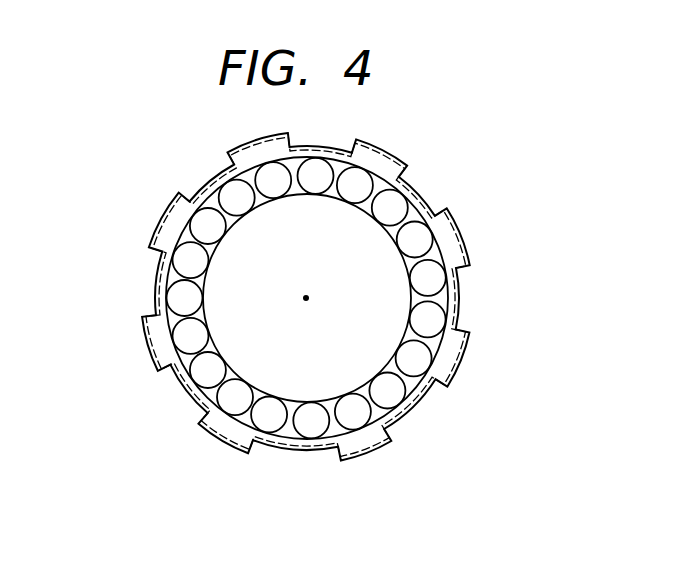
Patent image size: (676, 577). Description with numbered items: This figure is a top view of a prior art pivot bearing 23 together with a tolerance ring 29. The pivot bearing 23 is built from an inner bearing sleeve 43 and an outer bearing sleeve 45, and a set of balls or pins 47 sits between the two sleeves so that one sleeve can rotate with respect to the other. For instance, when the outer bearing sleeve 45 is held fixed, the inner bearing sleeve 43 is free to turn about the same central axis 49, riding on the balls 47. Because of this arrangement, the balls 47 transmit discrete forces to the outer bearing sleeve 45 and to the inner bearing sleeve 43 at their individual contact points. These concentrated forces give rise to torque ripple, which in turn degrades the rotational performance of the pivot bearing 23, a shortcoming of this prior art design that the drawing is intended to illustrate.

The pivot bearing 23 is at (265, 244).
The tolerance ring 29 is at (412, 406).
The inner bearing sleeve 43 is at (168, 281).
The outer bearing sleeve 45 is at (387, 158).
The balls or pins 47 is at (428, 316).
The central axis 49 is at (308, 297).